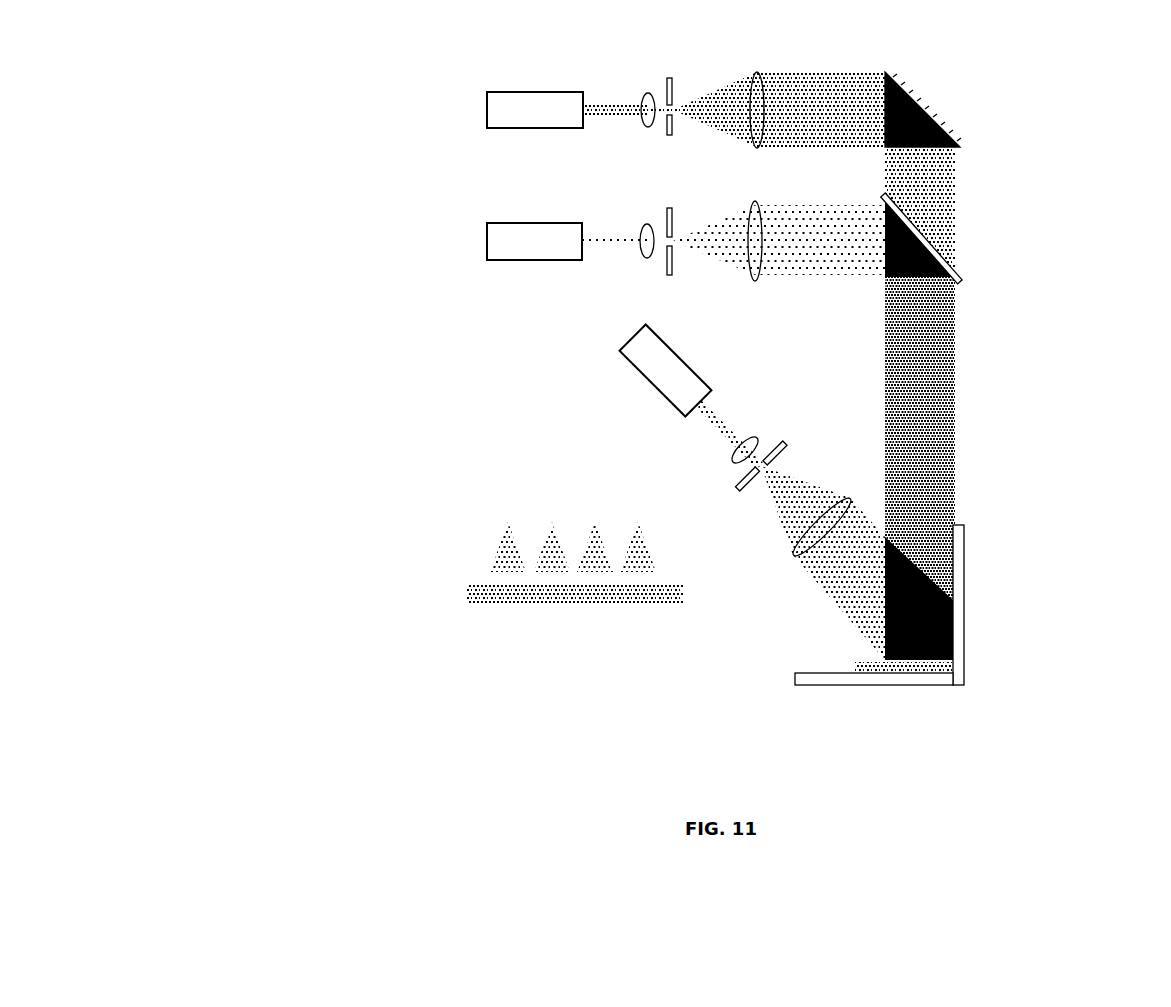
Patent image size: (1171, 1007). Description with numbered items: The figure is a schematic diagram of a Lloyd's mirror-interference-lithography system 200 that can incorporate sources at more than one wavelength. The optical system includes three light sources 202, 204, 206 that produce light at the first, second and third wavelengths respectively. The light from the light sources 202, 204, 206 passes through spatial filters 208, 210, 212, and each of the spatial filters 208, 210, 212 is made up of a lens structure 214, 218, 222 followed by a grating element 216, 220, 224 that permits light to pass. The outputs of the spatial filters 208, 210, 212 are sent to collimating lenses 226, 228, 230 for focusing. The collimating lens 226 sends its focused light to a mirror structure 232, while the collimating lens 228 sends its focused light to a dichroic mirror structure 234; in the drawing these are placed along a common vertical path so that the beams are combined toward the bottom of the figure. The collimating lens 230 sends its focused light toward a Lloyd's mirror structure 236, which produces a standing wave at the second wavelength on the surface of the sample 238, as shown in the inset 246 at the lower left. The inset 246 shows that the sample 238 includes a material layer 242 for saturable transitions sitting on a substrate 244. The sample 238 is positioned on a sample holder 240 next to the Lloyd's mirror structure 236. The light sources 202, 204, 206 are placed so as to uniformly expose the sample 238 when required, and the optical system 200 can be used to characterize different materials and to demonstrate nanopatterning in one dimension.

The Lloyd's mirror-interference-lithography system 200 is at (198, 101).
The light source 202 is at (519, 88).
The light source 204 is at (519, 219).
The light source 206 is at (620, 342).
The spatial filter 208 is at (661, 103).
The spatial filter 210 is at (650, 231).
The spatial filter 212 is at (780, 420).
The lens structure 214 is at (638, 123).
The grating element 216 is at (665, 143).
The lens structure 218 is at (637, 231).
The grating element 220 is at (655, 269).
The lens structure 222 is at (747, 430).
The grating element 224 is at (781, 445).
The collimating lens 226 is at (766, 109).
The collimating lens 228 is at (763, 234).
The collimating lens 230 is at (845, 490).
The mirror structure 232 is at (956, 109).
The dichroic mirror structure 234 is at (980, 248).
The Lloyd's mirror structure 236 is at (965, 613).
The sample 238 is at (943, 667).
The sample holder 240 is at (797, 672).
The material layer 242 is at (483, 570).
The substrate 244 is at (476, 600).
The inset 246 is at (551, 595).